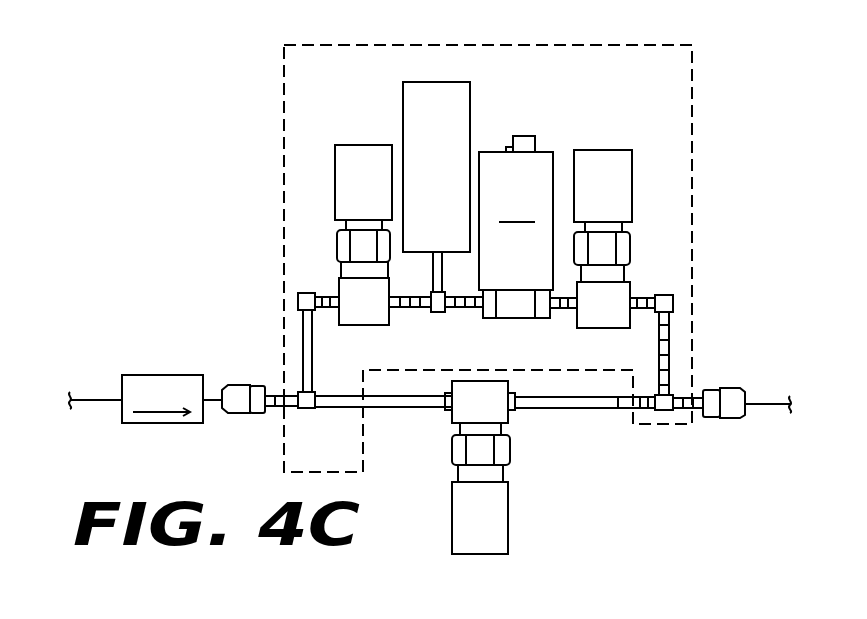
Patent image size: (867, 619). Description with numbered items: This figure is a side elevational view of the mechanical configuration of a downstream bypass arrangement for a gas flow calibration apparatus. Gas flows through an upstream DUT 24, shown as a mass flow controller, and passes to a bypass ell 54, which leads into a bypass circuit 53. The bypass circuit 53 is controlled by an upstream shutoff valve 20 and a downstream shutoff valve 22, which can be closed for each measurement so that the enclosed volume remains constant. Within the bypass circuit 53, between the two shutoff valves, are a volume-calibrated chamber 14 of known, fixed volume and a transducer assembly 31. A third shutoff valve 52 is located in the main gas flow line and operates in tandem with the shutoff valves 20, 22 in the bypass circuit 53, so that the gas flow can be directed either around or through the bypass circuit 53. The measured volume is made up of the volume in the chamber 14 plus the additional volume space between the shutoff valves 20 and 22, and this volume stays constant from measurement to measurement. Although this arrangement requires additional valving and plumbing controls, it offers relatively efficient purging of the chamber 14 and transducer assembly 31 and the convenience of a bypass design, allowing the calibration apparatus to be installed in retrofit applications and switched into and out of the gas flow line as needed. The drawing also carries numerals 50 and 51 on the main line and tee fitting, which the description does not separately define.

The chamber 14 is at (470, 101).
The upstream shutoff valve 20 is at (351, 197).
The downstream shutoff valve 22 is at (591, 198).
The DUT 24 is at (162, 375).
The transducer assembly 31 is at (533, 165).
The bypass line 50 is at (347, 407).
The tee fitting 51 is at (437, 312).
The third shutoff valve 52 is at (468, 522).
The bypass circuit 53 is at (692, 212).
The bypass ell 54 is at (312, 394).